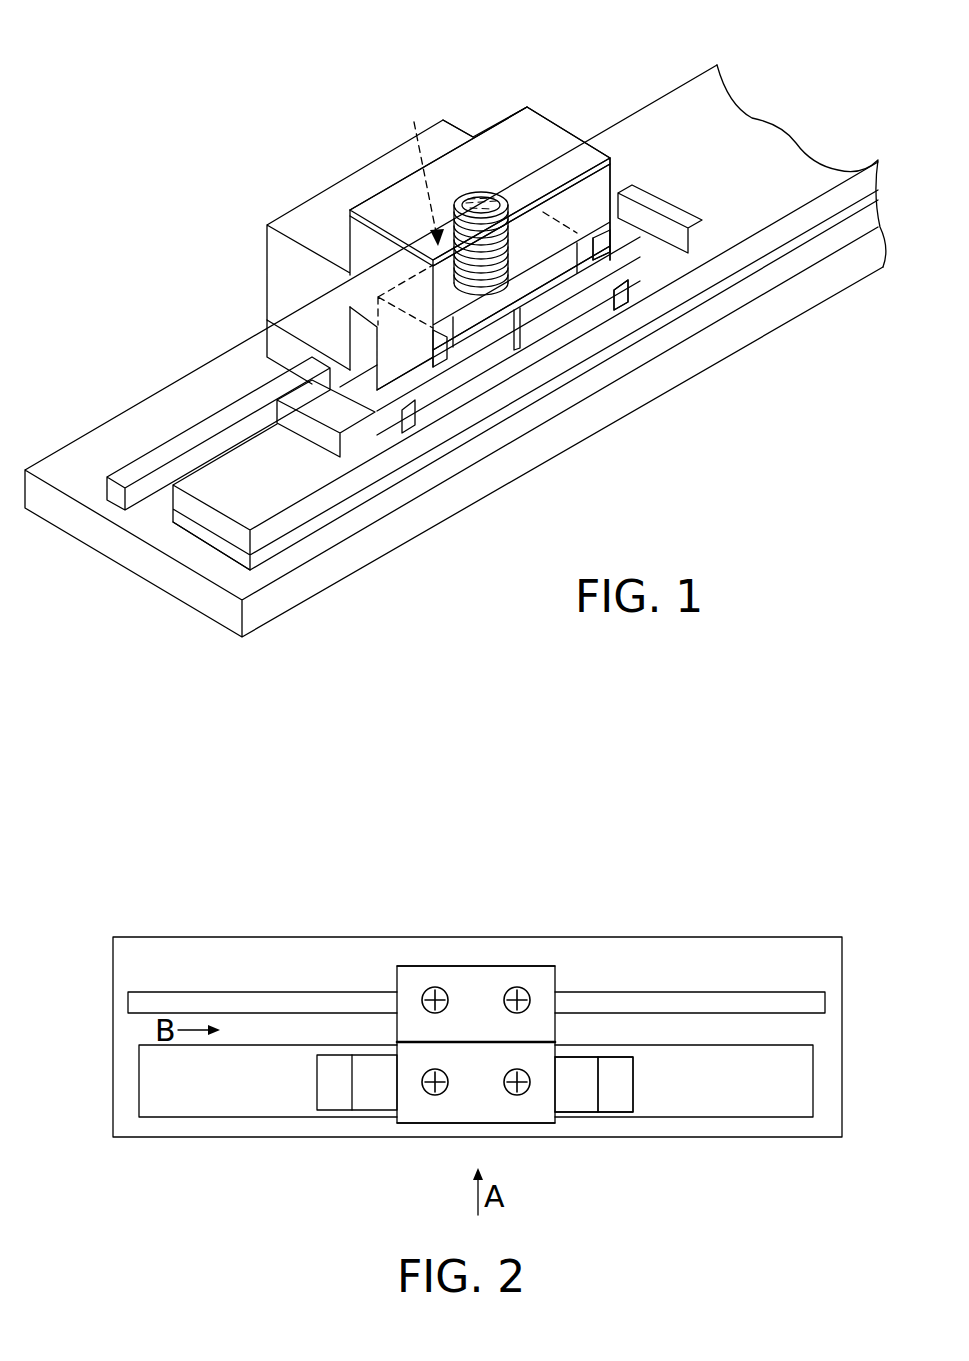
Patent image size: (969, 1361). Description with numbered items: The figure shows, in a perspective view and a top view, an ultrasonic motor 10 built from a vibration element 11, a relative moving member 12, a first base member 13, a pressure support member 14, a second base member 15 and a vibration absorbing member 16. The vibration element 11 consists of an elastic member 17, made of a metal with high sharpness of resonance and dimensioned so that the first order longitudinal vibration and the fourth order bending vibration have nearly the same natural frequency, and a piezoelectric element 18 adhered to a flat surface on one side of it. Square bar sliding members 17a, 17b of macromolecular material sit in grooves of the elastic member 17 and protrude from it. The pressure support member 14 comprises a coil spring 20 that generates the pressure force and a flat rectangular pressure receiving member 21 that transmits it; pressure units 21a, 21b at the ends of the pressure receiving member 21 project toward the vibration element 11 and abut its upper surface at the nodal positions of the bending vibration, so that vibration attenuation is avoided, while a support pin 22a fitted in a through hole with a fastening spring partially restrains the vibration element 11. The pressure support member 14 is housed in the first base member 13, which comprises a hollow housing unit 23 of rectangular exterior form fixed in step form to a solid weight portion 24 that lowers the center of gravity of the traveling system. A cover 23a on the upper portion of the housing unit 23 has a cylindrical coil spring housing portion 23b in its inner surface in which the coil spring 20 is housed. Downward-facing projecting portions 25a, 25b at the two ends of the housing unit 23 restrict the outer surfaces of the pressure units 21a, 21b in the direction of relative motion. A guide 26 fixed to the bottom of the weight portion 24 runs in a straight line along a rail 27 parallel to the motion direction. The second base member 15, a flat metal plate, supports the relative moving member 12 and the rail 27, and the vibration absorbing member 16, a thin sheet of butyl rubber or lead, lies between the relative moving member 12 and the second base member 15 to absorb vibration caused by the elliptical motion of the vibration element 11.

In FIG. 1, the ultrasonic motor 10 is at (266, 145).
In FIG. 2, the ultrasonic motor 10 is at (316, 905).
In FIG. 1, the vibration element 11 is at (612, 177).
In FIG. 2, the vibration element 11 is at (636, 1085).
In FIG. 1, the relative moving member 12 is at (217, 520).
In FIG. 2, the relative moving member 12 is at (140, 1086).
In FIG. 1, the first base member 13 is at (527, 108).
In FIG. 2, the first base member 13 is at (397, 960).
In FIG. 1, the pressure support member 14 is at (477, 209).
In FIG. 1, the second base member 15 is at (335, 566).
In FIG. 2, the second base member 15 is at (233, 1138).
In FIG. 1, the vibration absorbing member 16 is at (273, 550).
In FIG. 1, the elastic member 17 is at (690, 237).
In FIG. 2, the elastic member 17 is at (616, 1118).
In FIG. 1, the sliding member 17a is at (415, 425).
In FIG. 1, the sliding member 17b is at (614, 300).
In FIG. 1, the piezoelectric element 18 is at (628, 296).
In FIG. 2, the piezoelectric element 18 is at (572, 1118).
In FIG. 1, the coil spring 20 is at (494, 196).
In FIG. 1, the pressure receiving member 21 is at (500, 345).
In FIG. 1, the pressure unit 21a is at (448, 360).
In FIG. 1, the pressure unit 21b is at (595, 262).
In FIG. 1, the support pin 22a is at (522, 350).
In FIG. 1, the housing unit 23 is at (633, 182).
In FIG. 2, the housing unit 23 is at (423, 1123).
In FIG. 1, the cover 23a is at (488, 142).
In FIG. 1, the coil spring housing portion 23b is at (507, 193).
In FIG. 1, the weight portion 24 is at (385, 154).
In FIG. 2, the weight portion 24 is at (492, 964).
In FIG. 1, the projecting portion 25a is at (330, 447).
In FIG. 1, the projecting portion 25b is at (617, 227).
In FIG. 1, the guide 26 is at (273, 340).
In FIG. 1, the rail 27 is at (137, 459).
In FIG. 2, the rail 27 is at (195, 992).